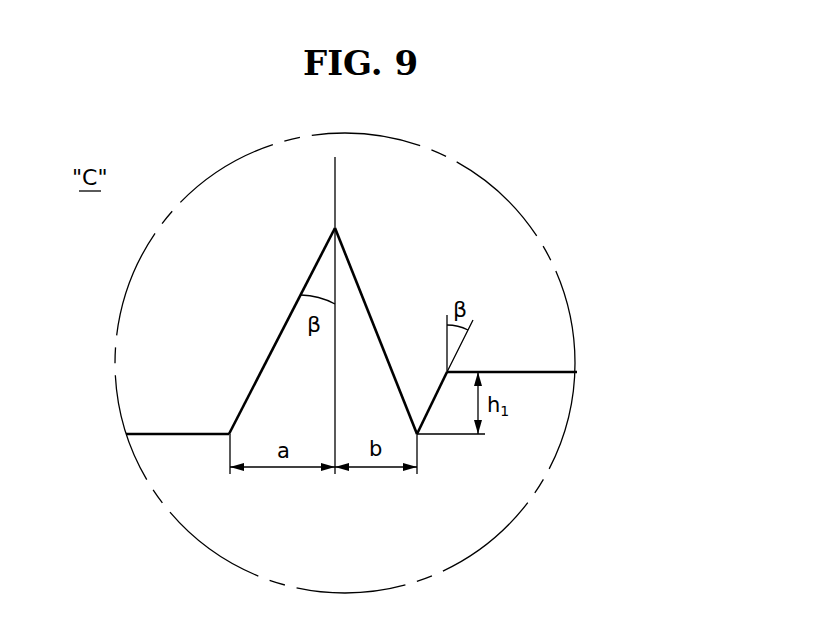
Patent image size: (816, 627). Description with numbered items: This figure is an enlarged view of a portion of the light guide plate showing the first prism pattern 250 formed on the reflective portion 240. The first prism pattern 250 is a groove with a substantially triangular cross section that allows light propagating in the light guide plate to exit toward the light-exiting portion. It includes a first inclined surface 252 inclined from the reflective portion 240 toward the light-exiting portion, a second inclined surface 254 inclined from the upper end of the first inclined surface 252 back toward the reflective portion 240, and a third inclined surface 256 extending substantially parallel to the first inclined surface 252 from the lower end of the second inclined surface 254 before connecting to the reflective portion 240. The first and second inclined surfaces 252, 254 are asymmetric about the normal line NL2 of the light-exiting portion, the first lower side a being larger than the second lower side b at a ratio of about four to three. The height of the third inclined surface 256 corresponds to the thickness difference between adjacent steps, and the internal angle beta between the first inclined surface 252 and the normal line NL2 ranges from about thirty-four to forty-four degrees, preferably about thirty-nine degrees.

The reflective portion 240 is at (180, 434).
The first prism pattern 250 is at (306, 331).
The first inclined surface 252 is at (260, 369).
The second inclined surface 254 is at (375, 314).
The third inclined surface 256 is at (430, 400).
The normal line NL2 is at (335, 200).